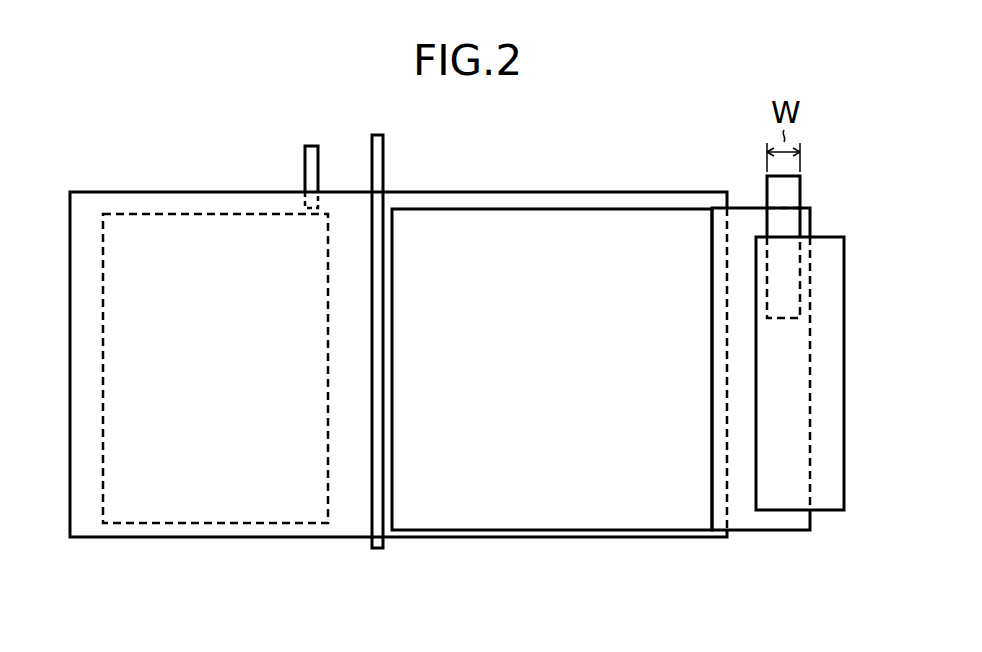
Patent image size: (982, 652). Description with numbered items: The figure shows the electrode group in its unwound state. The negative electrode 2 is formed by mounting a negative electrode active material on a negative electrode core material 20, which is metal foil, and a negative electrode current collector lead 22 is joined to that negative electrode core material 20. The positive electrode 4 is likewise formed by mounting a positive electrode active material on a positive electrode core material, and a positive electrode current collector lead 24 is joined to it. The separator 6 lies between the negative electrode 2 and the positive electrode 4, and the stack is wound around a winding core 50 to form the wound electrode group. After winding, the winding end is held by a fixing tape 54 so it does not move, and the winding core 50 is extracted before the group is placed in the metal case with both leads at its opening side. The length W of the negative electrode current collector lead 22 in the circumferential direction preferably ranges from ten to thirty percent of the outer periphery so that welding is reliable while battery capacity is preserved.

The negative electrode 2 is at (564, 225).
The positive electrode 4 is at (128, 365).
The separator 6 is at (349, 508).
The negative electrode core material 20 is at (750, 225).
The negative electrode current collector lead 22 is at (783, 194).
The positive electrode current collector lead 24 is at (308, 172).
The winding core 50 is at (386, 157).
The fixing tape 54 is at (783, 402).